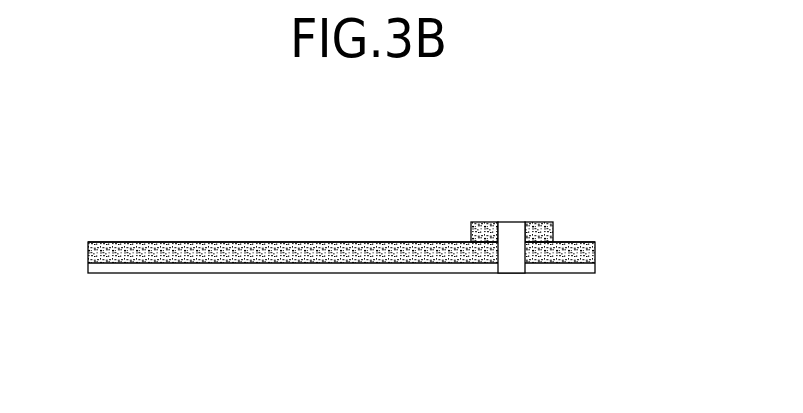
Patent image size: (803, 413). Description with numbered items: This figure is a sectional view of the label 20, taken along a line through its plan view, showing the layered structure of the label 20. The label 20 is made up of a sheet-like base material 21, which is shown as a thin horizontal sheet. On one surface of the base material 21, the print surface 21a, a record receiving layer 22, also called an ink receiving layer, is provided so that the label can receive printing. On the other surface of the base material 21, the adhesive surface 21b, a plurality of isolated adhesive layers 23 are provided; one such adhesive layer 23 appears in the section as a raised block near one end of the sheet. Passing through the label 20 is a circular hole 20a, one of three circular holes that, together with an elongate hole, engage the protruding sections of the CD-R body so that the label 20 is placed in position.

The label 20 is at (364, 238).
The circular hole 20a is at (513, 222).
The sheet-like base material 21 is at (341, 246).
The print surface 21a is at (147, 263).
The adhesive surface 21b is at (153, 242).
The record receiving layer 22 is at (257, 273).
The adhesive layer 23 is at (555, 233).